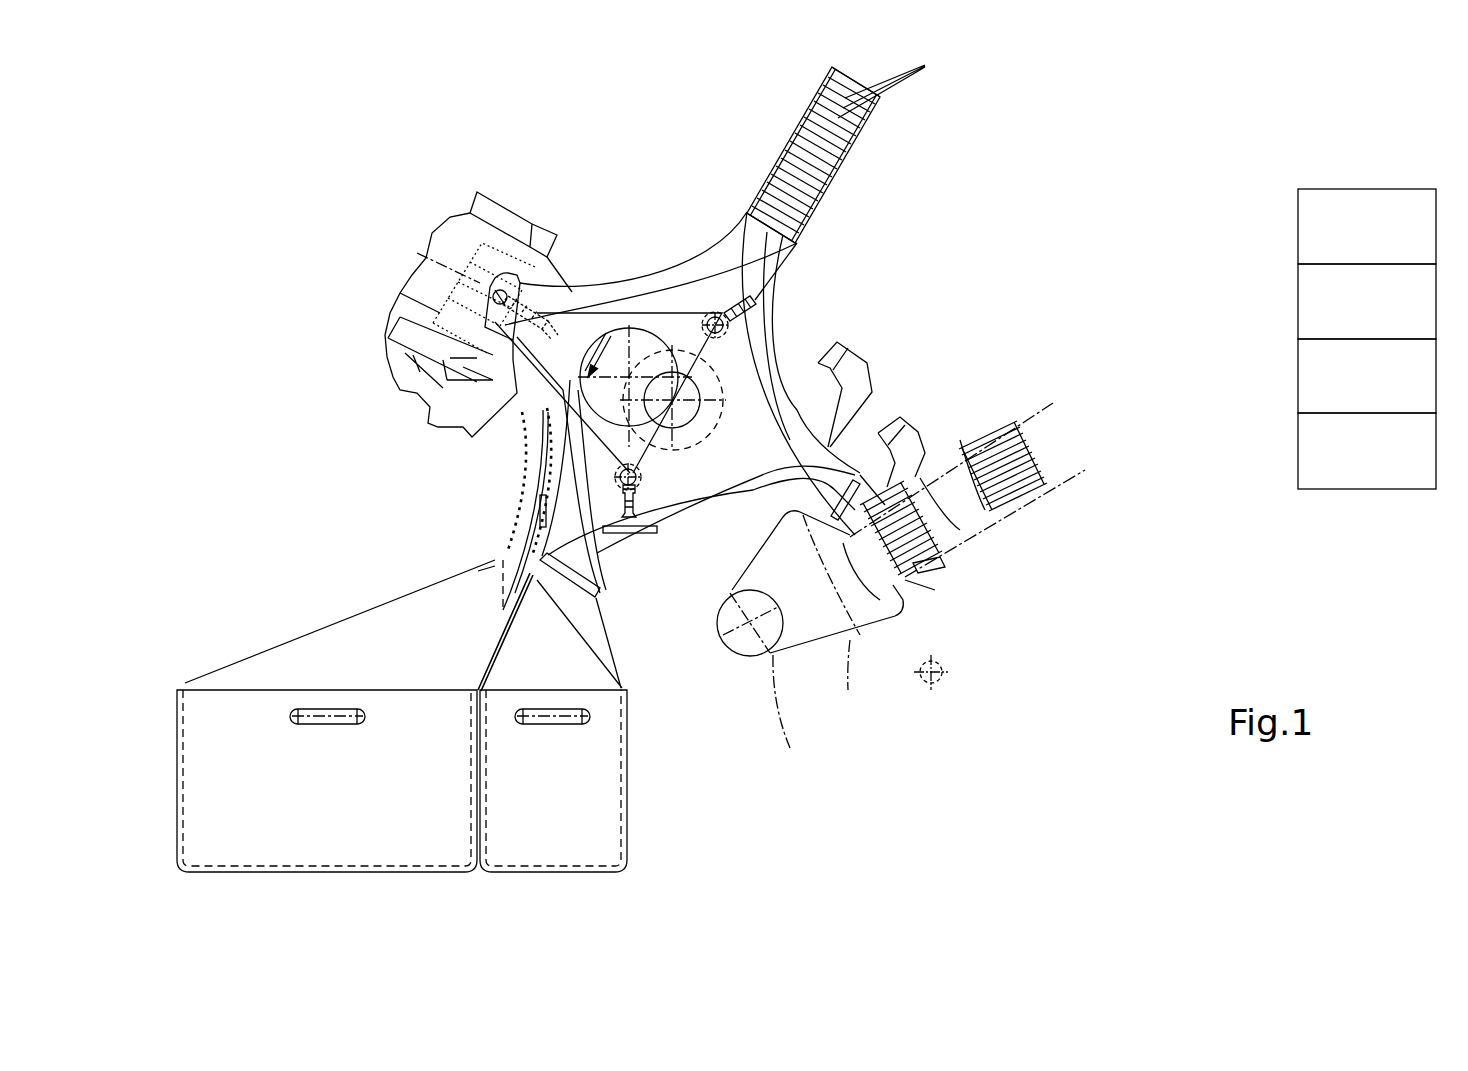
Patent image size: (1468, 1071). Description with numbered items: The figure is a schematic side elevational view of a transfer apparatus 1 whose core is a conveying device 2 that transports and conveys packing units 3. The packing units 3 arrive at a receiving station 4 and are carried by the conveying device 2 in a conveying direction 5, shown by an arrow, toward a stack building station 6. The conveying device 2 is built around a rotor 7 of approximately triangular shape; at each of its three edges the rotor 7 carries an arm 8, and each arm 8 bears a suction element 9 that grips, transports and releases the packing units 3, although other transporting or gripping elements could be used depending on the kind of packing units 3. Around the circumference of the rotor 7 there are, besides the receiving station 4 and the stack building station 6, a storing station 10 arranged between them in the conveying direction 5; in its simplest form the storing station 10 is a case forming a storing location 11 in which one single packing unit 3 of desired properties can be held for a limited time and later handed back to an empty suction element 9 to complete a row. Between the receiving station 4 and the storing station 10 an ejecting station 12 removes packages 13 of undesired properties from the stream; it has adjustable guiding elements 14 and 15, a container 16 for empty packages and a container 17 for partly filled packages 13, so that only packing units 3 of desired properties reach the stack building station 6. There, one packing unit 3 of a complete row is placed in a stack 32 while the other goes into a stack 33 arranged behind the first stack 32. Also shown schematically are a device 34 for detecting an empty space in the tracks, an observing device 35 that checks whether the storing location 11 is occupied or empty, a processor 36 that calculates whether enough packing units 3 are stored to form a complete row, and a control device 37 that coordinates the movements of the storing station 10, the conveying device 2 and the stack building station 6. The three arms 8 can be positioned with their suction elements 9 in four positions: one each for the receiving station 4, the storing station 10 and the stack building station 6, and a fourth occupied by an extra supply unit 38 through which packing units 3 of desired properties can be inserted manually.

The transfer apparatus 1 is at (603, 133).
The conveying device 2 is at (633, 217).
The packing units 3 is at (490, 287).
The receiving station 4 is at (430, 228).
The conveying direction 5 is at (598, 337).
The stack building station 6 is at (950, 557).
The rotor 7 is at (683, 323).
The arm 8 is at (565, 345).
The suction element 9 is at (502, 300).
The storing station 10 is at (617, 593).
The storing location 11 is at (595, 600).
The ejecting station 12 is at (513, 470).
The packing units of undesired properties 13 is at (525, 508).
The adjustable guiding element 14 is at (537, 478).
The adjustable guiding element 15 is at (510, 600).
The container for receiving empty packages 16 is at (342, 823).
The container for receiving partly filled packages 17 is at (578, 823).
The stack 32 is at (930, 560).
The stack 33 is at (933, 587).
The device for detecting an empty space 34 is at (1323, 231).
The observing device 35 is at (1330, 300).
The processor 36 is at (1333, 378).
The control device 37 is at (1333, 447).
The extra supply unit 38 is at (862, 162).